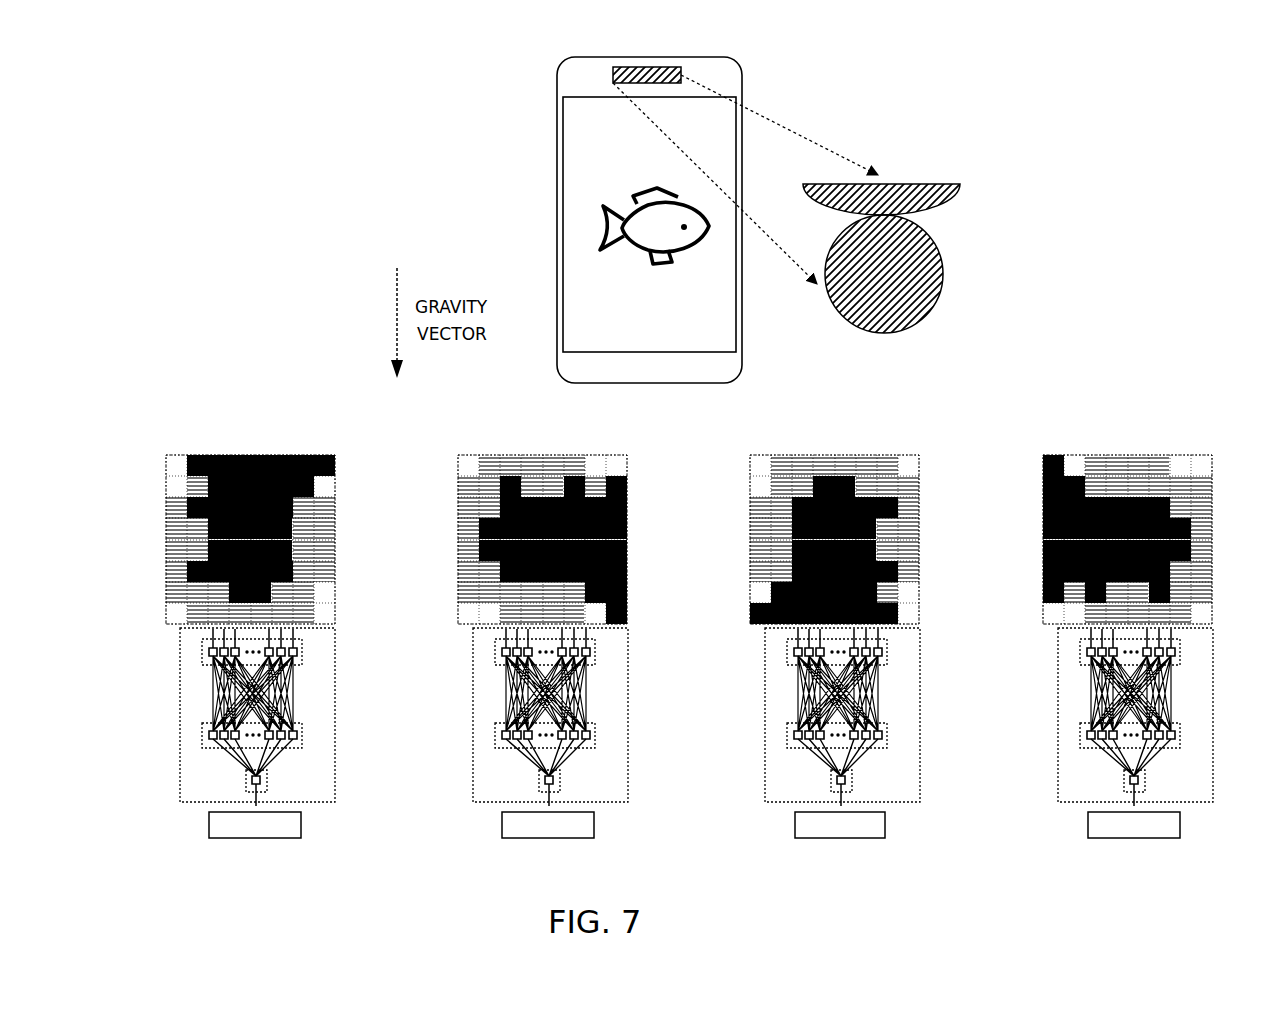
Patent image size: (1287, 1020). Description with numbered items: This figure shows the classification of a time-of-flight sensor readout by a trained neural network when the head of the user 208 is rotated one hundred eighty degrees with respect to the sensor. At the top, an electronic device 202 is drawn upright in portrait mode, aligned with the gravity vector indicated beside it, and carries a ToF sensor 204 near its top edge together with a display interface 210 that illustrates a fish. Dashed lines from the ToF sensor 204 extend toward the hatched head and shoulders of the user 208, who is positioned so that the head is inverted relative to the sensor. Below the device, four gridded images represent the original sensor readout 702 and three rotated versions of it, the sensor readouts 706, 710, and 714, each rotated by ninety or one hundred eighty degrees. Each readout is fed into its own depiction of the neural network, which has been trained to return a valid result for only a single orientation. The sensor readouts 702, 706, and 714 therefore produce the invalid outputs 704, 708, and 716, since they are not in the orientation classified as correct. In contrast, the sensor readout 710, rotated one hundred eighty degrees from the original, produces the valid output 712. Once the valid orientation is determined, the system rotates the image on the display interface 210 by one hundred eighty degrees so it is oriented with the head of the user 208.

The electronic device 202 is at (557, 80).
The time-of-flight sensor 204 is at (652, 66).
The display interface 210 is at (565, 186).
The user 208 is at (942, 268).
The original sensor readout 702 is at (166, 530).
The invalid output 704 is at (209, 828).
The sensor readout 706 is at (458, 530).
The invalid output 708 is at (502, 828).
The sensor readout 710 is at (750, 530).
The valid output 712 is at (795, 828).
The sensor readout 714 is at (1043, 530).
The invalid output 716 is at (1088, 828).